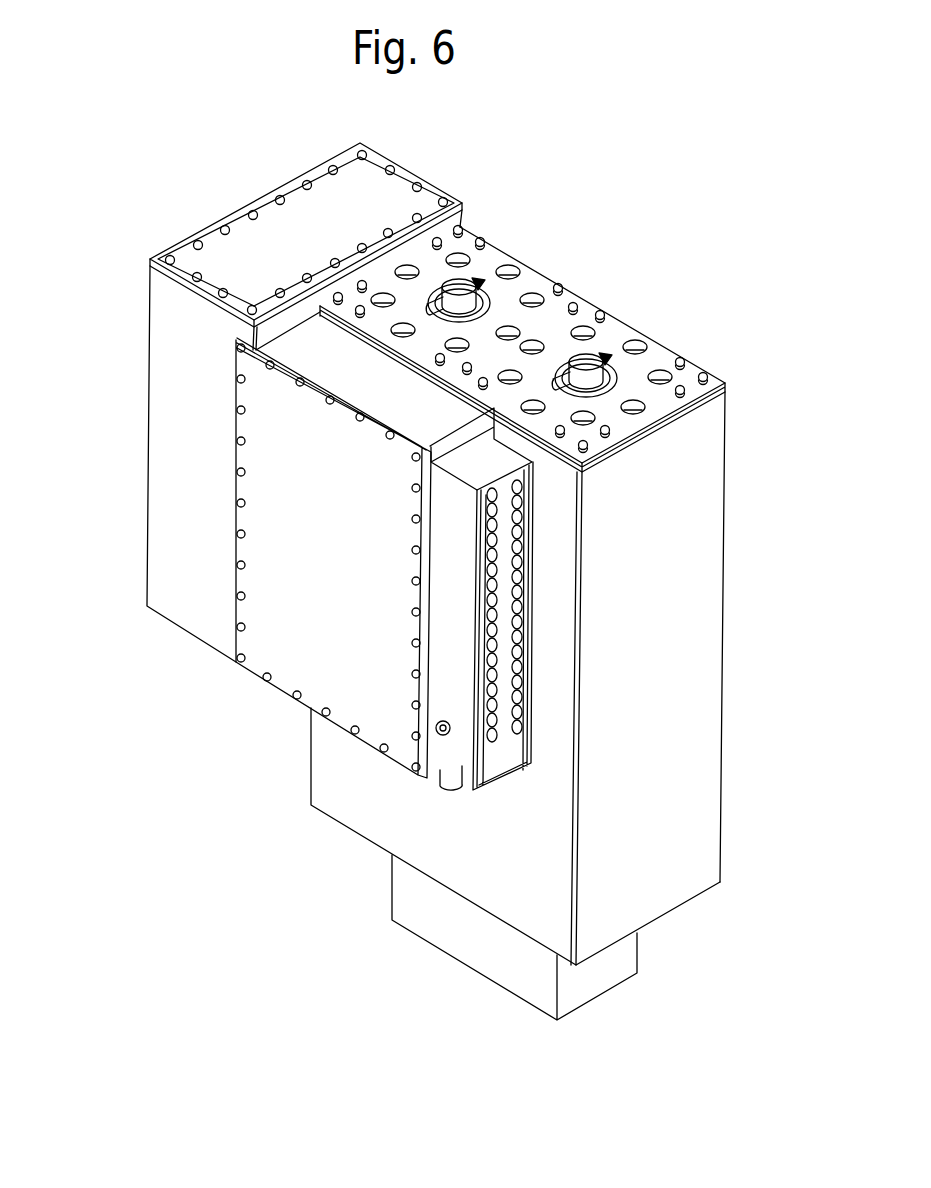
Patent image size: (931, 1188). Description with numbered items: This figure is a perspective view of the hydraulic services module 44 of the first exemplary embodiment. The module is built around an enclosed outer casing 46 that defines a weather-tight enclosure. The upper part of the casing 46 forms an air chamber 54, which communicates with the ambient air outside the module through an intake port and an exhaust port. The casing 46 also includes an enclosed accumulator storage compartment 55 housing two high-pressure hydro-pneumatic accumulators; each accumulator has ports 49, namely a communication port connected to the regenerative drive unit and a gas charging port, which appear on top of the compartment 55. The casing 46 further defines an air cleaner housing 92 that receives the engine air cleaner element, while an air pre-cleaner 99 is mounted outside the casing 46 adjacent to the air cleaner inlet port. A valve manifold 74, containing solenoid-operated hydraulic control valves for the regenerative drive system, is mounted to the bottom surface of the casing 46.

The hydraulic services module 44 is at (658, 299).
The outer casing 46 is at (722, 629).
The accumulator ports 49 is at (458, 290).
The air chamber 54 is at (162, 480).
The accumulator storage compartment 55 is at (711, 487).
The valve manifold 74 is at (400, 888).
The air cleaner housing 92 is at (298, 655).
The air pre-cleaner 99 is at (503, 753).